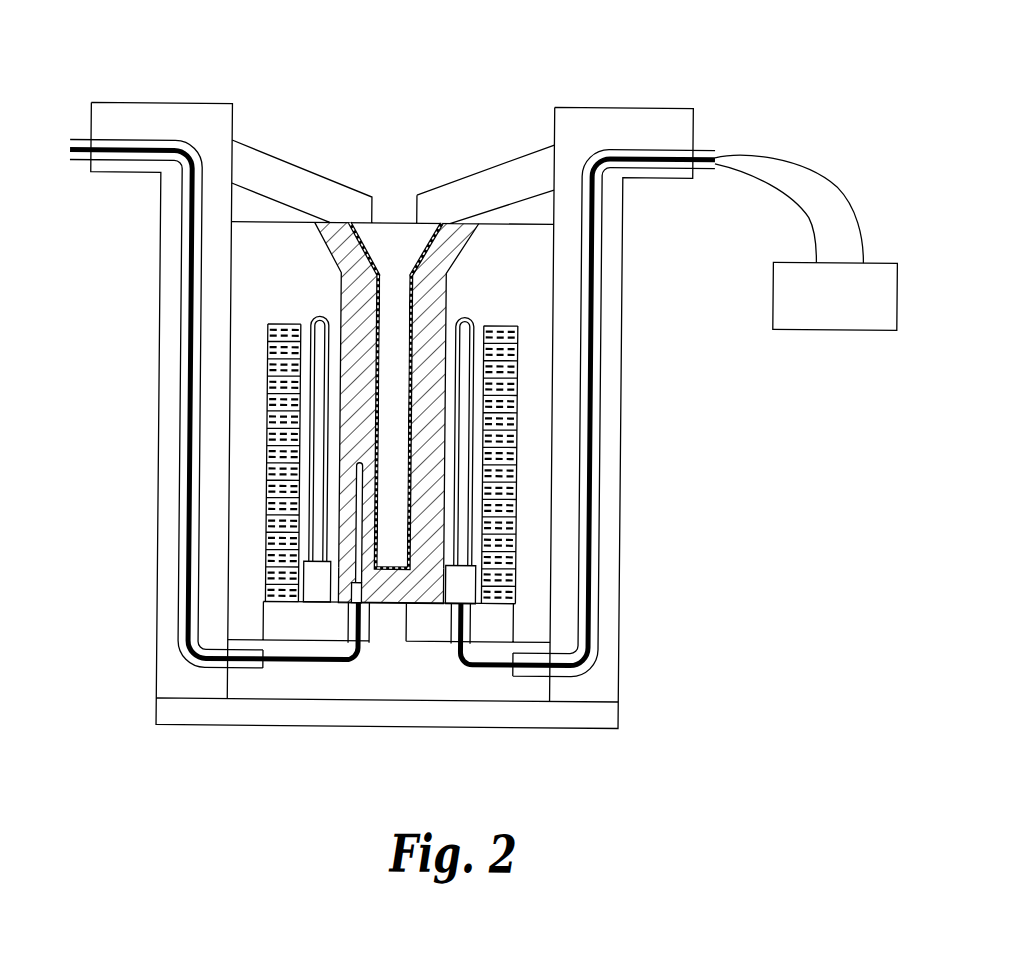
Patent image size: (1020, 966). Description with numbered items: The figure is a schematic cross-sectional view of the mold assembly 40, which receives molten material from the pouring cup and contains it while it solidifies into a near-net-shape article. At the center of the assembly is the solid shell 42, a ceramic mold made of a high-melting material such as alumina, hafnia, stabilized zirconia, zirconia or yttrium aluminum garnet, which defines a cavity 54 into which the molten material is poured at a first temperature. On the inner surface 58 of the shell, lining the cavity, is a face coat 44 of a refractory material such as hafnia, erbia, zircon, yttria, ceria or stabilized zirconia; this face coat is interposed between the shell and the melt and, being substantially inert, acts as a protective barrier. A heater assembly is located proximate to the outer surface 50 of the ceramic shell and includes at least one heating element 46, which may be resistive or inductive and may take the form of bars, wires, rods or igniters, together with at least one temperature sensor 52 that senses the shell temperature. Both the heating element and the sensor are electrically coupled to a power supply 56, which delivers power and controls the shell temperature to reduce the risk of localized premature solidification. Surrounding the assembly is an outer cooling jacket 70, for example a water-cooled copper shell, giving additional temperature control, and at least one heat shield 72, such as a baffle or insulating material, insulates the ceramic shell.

The mold assembly 40 is at (380, 50).
The solid shell 42 is at (425, 588).
The face coat 44 is at (417, 245).
The heating element 46 is at (482, 317).
The outer surface 50 is at (445, 303).
The temperature sensor 52 is at (360, 583).
The cavity 54 is at (385, 305).
The power supply 56 is at (817, 312).
The inner surface 58 is at (418, 287).
The outer cooling jacket 70 is at (159, 469).
The heat shield 72 is at (267, 513).